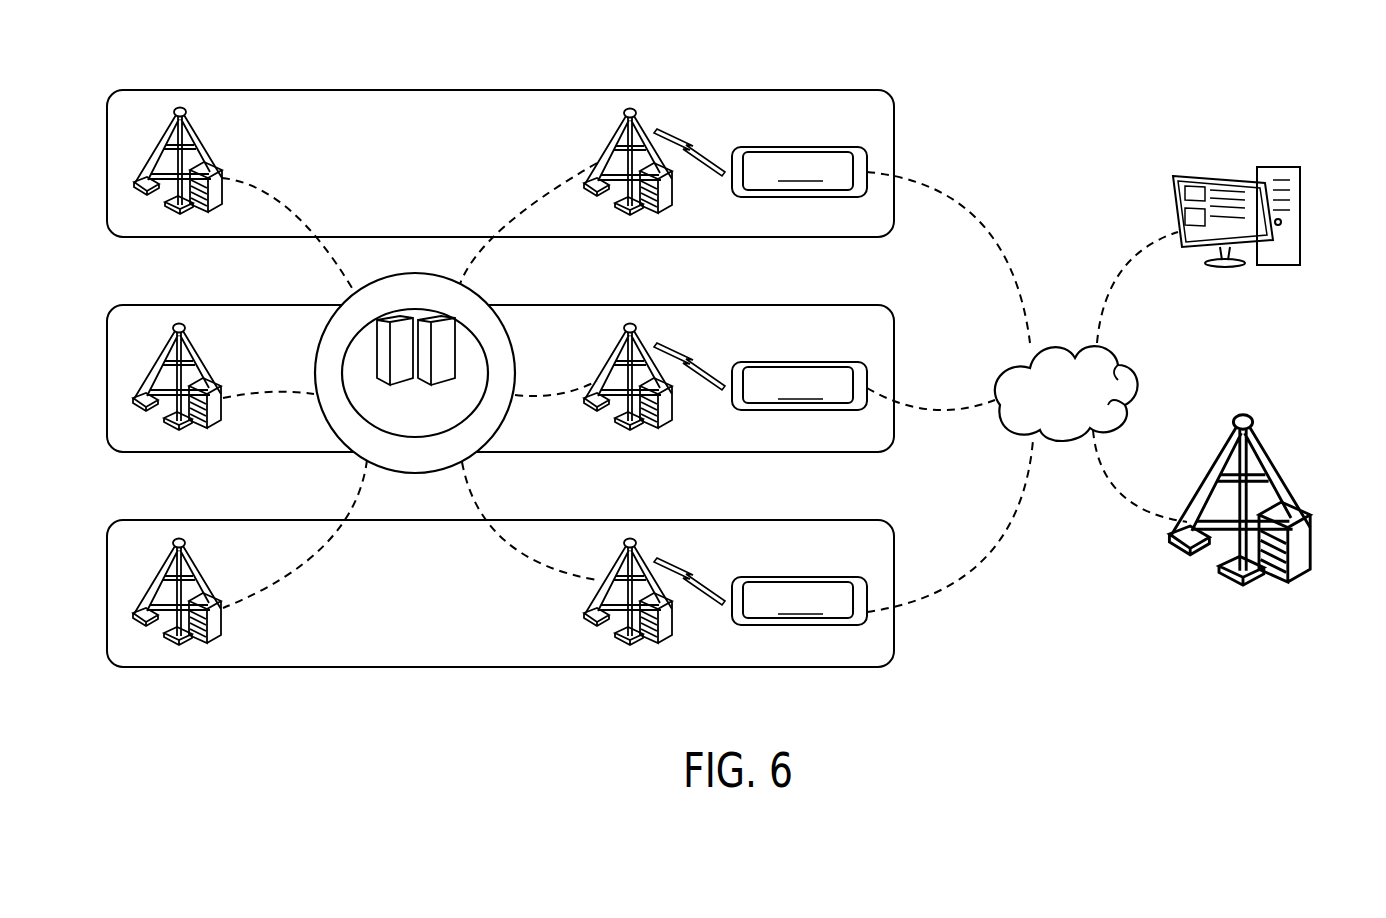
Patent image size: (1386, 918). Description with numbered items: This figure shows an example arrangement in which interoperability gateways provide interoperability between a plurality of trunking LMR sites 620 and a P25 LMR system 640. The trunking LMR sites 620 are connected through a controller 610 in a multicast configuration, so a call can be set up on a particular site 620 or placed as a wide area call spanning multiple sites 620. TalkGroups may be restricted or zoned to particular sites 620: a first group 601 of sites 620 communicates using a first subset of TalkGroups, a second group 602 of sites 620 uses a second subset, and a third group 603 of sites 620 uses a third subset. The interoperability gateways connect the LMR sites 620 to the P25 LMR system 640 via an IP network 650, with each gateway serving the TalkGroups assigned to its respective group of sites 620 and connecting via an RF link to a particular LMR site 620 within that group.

The first group of sites 601 is at (897, 118).
The second group of sites 602 is at (897, 330).
The third group of sites 603 is at (897, 545).
The controller 610 is at (482, 298).
The trunking LMR sites 620 is at (190, 133).
The P25 LMR system 640 is at (1300, 442).
The IP network 650 is at (1130, 367).